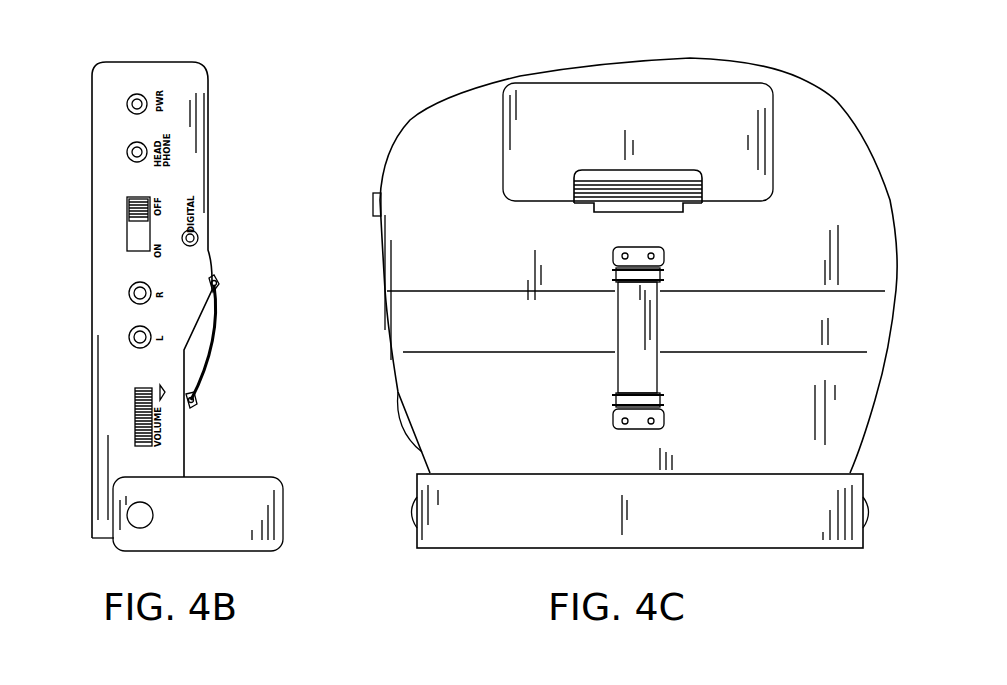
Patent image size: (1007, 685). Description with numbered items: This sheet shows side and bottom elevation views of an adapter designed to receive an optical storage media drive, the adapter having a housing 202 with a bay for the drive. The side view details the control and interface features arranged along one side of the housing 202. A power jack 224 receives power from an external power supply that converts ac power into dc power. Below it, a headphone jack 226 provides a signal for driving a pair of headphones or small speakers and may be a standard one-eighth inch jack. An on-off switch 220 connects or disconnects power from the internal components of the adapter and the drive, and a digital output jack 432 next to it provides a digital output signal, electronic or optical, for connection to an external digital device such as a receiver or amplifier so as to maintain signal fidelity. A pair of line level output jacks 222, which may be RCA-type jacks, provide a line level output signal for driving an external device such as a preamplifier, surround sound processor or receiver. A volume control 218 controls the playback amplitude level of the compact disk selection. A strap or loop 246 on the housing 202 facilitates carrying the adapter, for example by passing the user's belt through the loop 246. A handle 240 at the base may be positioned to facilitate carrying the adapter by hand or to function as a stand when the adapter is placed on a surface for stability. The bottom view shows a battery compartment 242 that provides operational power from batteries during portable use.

In FIG. 4C, the housing 202 is at (435, 153).
In FIG. 4B, the volume control 218 is at (134, 410).
In FIG. 4B, the on-off switch 220 is at (134, 226).
In FIG. 4B, the line level output jacks 222 is at (128, 337).
In FIG. 4B, the power jack 224 is at (132, 97).
In FIG. 4B, the headphone jack 226 is at (128, 151).
In FIG. 4B, the handle 240 is at (250, 477).
In FIG. 4C, the handle 240 is at (538, 548).
In FIG. 4C, the battery compartment 242 is at (673, 83).
In FIG. 4B, the strap or loop 246 is at (205, 353).
In FIG. 4C, the strap or loop 246 is at (625, 325).
In FIG. 4B, the digital output jack 432 is at (199, 239).